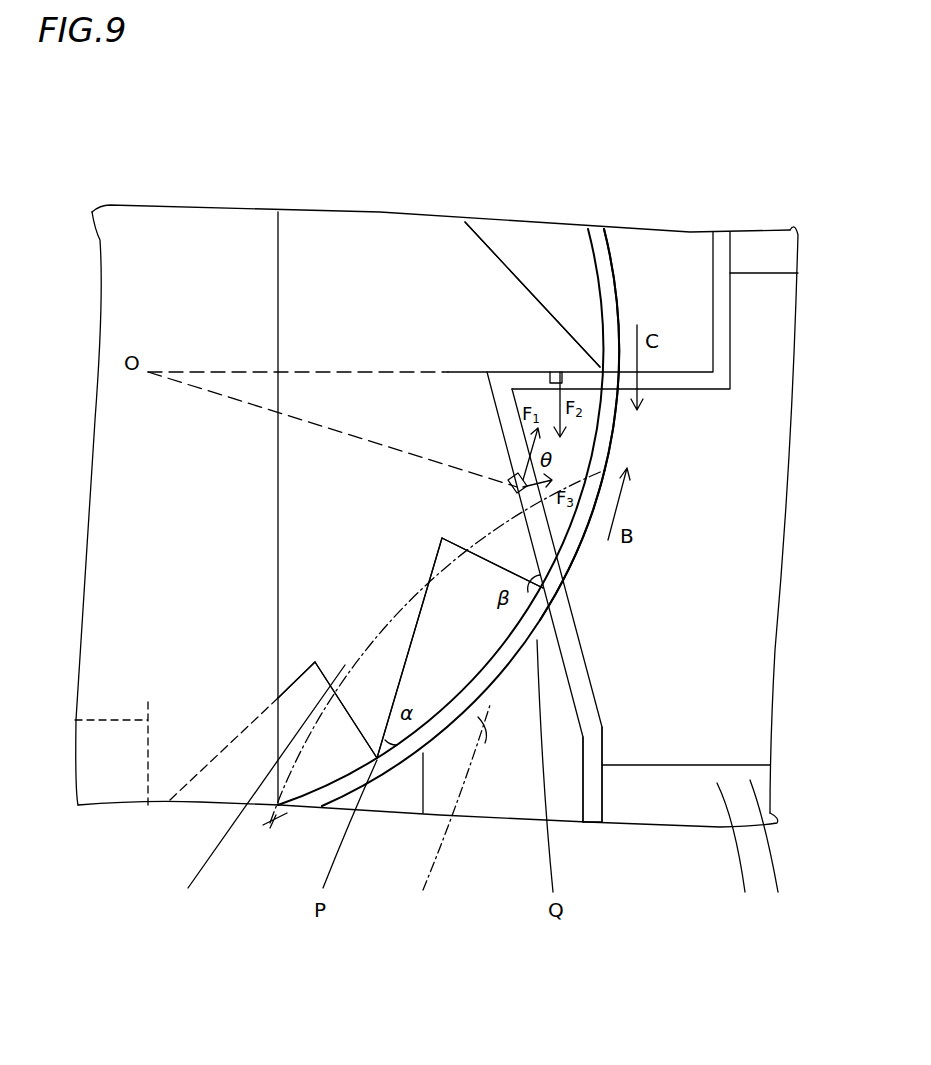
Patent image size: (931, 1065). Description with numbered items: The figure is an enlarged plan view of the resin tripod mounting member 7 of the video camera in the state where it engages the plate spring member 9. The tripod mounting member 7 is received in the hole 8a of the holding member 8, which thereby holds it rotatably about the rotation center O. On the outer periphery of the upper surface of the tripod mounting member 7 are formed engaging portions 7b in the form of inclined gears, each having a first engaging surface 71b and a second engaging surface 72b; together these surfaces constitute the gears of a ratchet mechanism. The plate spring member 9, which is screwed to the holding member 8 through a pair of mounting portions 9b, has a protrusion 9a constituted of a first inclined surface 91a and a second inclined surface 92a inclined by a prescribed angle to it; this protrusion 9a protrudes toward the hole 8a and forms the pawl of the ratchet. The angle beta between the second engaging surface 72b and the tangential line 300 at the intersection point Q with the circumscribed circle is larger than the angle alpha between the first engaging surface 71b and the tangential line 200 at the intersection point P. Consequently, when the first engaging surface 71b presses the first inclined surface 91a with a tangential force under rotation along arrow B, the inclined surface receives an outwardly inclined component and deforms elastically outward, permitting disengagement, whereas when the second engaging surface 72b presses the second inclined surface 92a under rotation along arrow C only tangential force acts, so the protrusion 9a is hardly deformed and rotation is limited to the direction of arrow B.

The tripod mounting member 7 is at (315, 323).
The engaging portion 7b is at (261, 793).
The holding member 8 is at (716, 543).
The hole 8a is at (512, 653).
The plate spring member 9 is at (734, 852).
The protrusion 9a is at (666, 95).
The mounting portion 9b is at (770, 851).
The first engaging surface 71b is at (500, 245).
The second engaging surface 72b is at (483, 570).
The first inclined surface 91a is at (500, 427).
The second inclined surface 92a is at (670, 372).
The tangential line 200 is at (275, 822).
The tangential line 300 is at (449, 813).